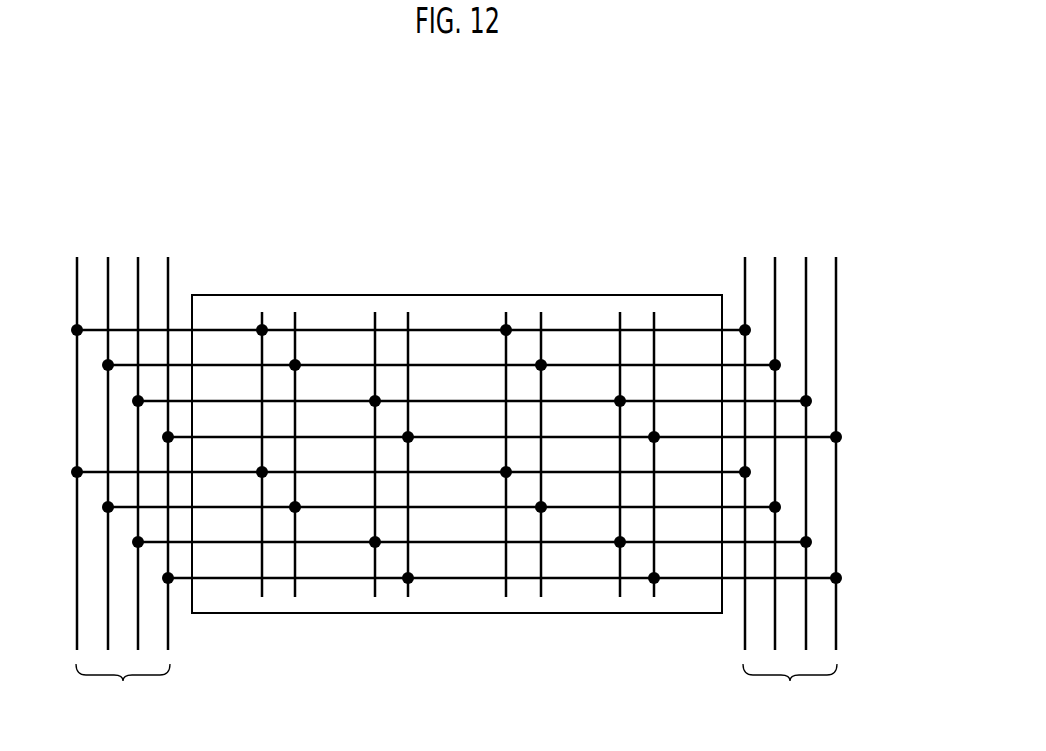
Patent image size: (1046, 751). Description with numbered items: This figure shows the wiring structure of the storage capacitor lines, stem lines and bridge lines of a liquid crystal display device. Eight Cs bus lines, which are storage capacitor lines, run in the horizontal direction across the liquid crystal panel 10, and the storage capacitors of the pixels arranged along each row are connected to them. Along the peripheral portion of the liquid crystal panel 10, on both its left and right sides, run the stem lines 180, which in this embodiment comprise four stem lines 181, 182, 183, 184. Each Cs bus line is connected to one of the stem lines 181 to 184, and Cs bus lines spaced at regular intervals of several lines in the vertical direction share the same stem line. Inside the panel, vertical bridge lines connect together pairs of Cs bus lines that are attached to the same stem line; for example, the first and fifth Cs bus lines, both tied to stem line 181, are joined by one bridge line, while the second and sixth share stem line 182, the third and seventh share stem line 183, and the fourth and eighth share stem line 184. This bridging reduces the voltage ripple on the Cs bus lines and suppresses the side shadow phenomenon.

The liquid crystal panel 10 is at (452, 203).
The stem lines 180 is at (456, 686).
The stem line 181 is at (78, 287).
The stem line 182 is at (109, 287).
The stem line 183 is at (139, 287).
The stem line 184 is at (169, 287).